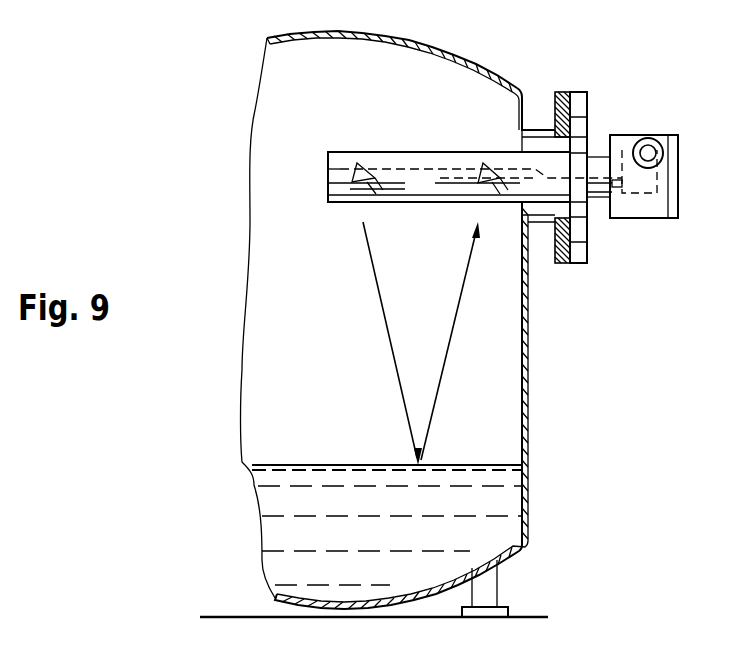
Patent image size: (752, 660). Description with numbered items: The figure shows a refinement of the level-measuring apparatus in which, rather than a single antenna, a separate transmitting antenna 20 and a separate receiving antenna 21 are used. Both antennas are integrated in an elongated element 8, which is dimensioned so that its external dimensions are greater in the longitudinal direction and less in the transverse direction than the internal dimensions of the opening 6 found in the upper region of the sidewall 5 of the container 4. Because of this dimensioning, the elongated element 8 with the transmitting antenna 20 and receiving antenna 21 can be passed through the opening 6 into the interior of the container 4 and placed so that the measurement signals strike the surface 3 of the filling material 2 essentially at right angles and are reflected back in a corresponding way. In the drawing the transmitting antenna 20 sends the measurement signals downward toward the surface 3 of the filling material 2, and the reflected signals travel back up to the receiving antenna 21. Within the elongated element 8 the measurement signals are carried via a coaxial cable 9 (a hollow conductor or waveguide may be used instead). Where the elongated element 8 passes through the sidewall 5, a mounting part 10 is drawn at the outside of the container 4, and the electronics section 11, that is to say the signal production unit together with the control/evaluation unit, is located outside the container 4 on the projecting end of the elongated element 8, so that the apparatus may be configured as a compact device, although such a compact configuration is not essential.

The filling material 2 is at (490, 503).
The surface 3 is at (280, 464).
The container 4 is at (340, 392).
The sidewall 5 is at (528, 373).
The opening 6 is at (541, 208).
The elongated element 8 is at (347, 160).
The coaxial cable 9 is at (382, 165).
The flange 10 is at (588, 103).
The electronics section 11 is at (645, 185).
The transmitting antenna 20 is at (342, 175).
The receiving antenna 21 is at (444, 165).